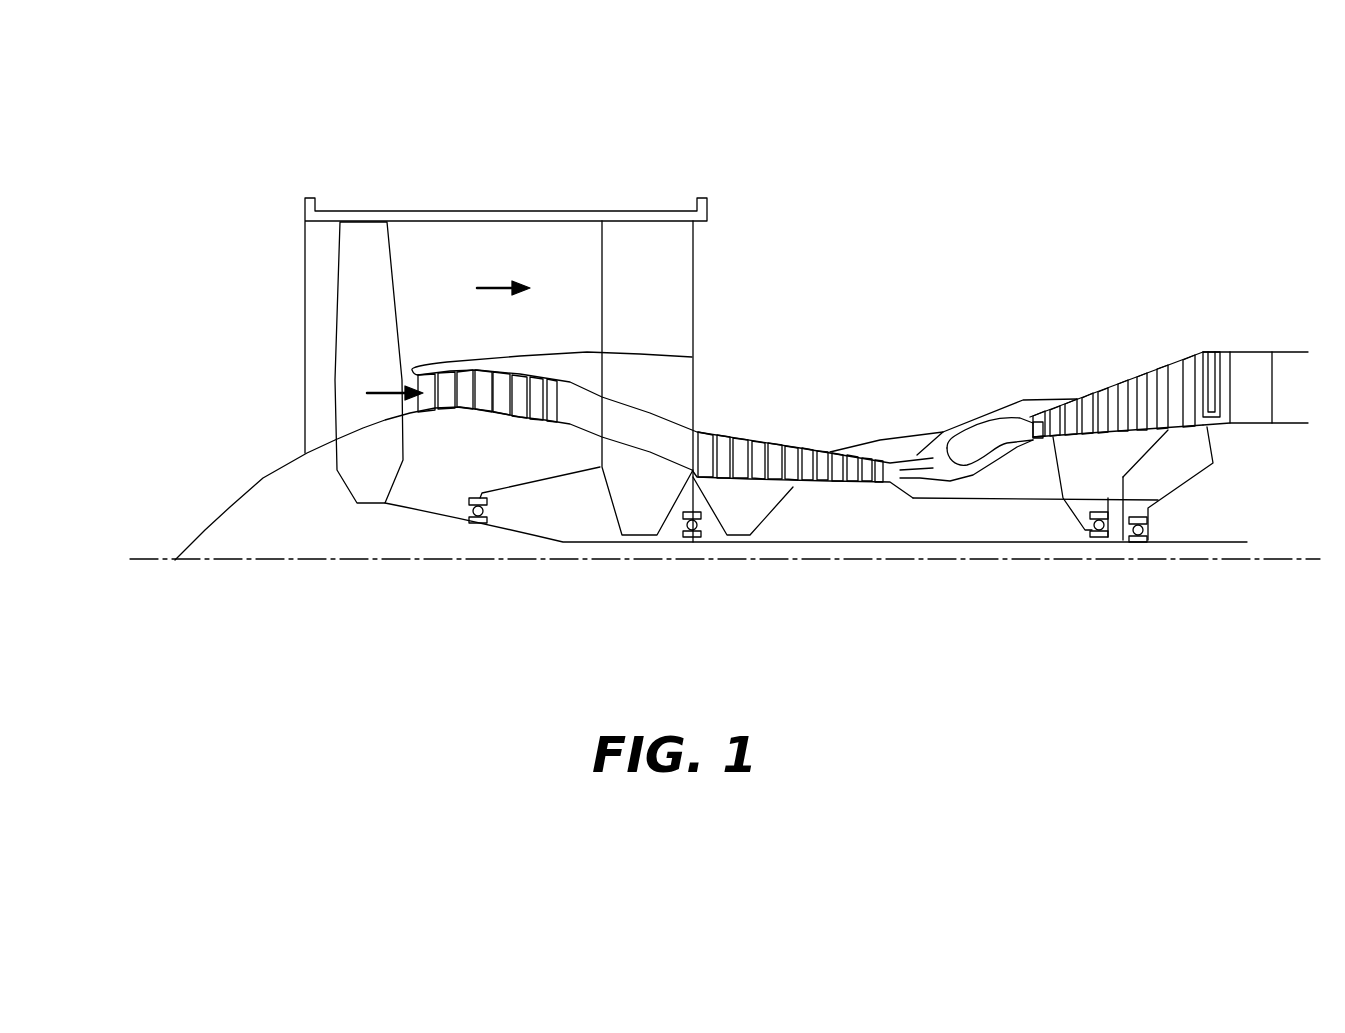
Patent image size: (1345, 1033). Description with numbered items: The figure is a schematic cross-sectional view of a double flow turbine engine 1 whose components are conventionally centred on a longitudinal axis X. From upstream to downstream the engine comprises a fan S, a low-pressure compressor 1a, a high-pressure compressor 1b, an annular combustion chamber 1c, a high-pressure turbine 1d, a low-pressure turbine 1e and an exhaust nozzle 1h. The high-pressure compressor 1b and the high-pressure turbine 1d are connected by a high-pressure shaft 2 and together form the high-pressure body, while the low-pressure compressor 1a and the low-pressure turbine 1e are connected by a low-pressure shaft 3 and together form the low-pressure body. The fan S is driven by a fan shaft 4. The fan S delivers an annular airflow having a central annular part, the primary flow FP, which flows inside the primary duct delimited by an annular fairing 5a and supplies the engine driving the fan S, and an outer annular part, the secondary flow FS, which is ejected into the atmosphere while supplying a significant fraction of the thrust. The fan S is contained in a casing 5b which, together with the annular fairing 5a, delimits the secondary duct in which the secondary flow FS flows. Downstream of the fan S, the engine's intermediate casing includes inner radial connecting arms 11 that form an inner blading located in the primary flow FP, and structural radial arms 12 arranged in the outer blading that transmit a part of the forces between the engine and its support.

The double flow turbine engine 1 is at (862, 317).
The low-pressure compressor 1a is at (443, 373).
The high-pressure compressor 1b is at (740, 440).
The annular combustion chamber 1c is at (970, 450).
The high-pressure turbine 1d is at (1043, 417).
The low-pressure turbine 1e is at (1210, 380).
The exhaust nozzle 1h is at (1295, 385).
The high-pressure shaft 2 is at (957, 500).
The low-pressure shaft 3 is at (830, 542).
The fan shaft 4 is at (453, 530).
The annular fairing 5a is at (552, 365).
The casing 5b is at (368, 210).
The inner radial connecting arms 11 is at (643, 433).
The radial arms 12 is at (652, 260).
The fan S is at (357, 297).
The longitudinal axis X is at (162, 558).
The primary flow FP is at (388, 374).
The secondary flow FS is at (500, 267).